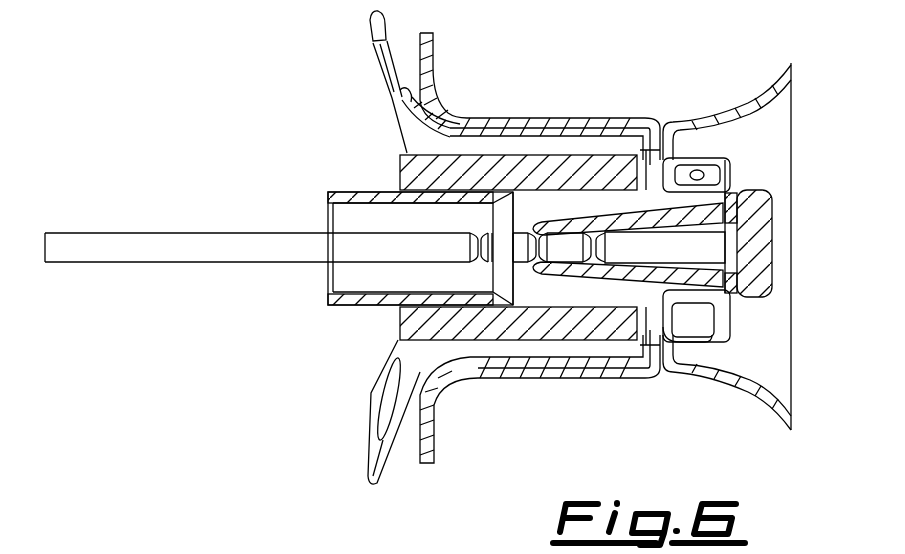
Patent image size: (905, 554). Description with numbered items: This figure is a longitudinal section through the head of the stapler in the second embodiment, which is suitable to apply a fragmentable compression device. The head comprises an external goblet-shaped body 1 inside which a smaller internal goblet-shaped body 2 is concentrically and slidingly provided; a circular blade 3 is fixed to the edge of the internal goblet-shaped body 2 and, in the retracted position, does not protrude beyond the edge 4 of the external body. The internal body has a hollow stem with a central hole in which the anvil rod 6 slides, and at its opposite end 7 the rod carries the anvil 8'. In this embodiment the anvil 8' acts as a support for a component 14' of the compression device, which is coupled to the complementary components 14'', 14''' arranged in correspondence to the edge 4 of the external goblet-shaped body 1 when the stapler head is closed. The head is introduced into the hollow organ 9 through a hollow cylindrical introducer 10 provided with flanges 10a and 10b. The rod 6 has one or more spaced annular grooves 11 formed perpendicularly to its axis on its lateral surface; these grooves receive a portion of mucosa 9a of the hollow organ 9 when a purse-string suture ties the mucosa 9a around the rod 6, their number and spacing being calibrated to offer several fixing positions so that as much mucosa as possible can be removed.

The external goblet-shaped body 1 is at (513, 330).
The internal goblet-shaped body 2 is at (385, 192).
The circular blade 3 is at (507, 223).
The edge 4 is at (648, 330).
The anvil rod 6 is at (118, 246).
The end 7 is at (715, 249).
The anvil 8' is at (738, 246).
The hollow organ 9 is at (482, 117).
The mucosa 9a is at (559, 226).
The hollow cylindrical introducer 10 is at (528, 130).
The flange 10a is at (370, 35).
The flange 10b is at (371, 444).
The annular grooves 11 is at (476, 240).
The component of the compression device 14' is at (756, 208).
The complementary component 14'' is at (711, 323).
The complementary component 14''' is at (701, 161).